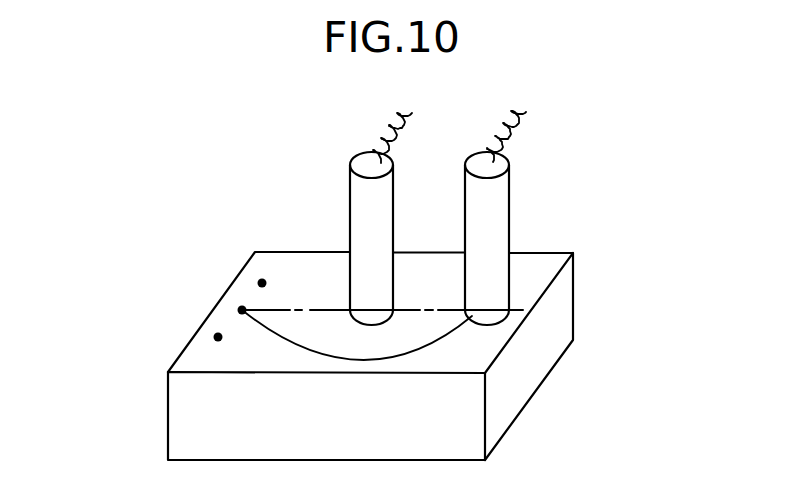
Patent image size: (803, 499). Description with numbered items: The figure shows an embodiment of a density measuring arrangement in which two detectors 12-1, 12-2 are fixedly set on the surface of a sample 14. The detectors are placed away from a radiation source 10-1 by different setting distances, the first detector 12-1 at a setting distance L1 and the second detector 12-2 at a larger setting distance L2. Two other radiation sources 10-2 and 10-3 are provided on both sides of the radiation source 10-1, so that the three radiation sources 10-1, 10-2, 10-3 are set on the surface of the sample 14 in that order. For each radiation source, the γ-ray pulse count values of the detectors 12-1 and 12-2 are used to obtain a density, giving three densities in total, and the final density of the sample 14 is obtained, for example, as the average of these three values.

The sample 14 is at (573, 268).
The detector 12-1 is at (348, 162).
The detector 12-2 is at (467, 168).
The radiation source 10-1 is at (242, 310).
The radiation source 10-2 is at (262, 283).
The radiation source 10-3 is at (218, 337).
The setting distance L1 is at (353, 318).
The setting distance L2 is at (357, 340).